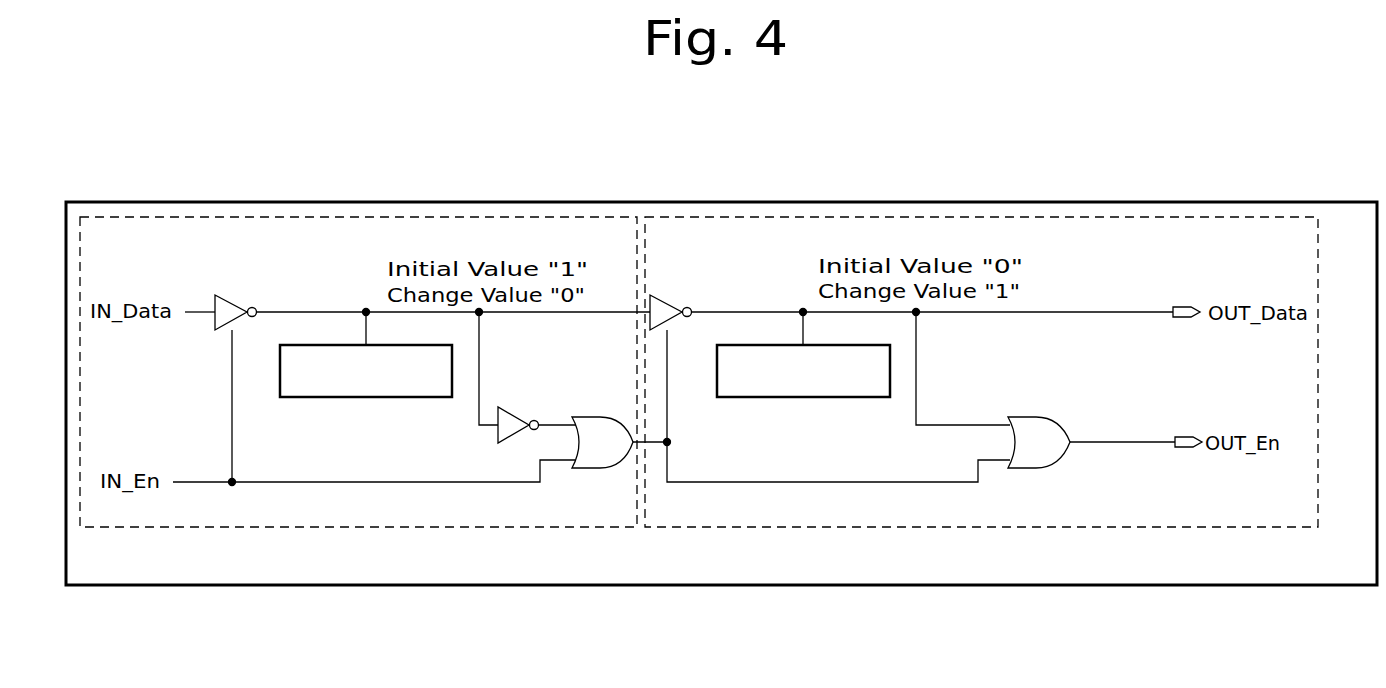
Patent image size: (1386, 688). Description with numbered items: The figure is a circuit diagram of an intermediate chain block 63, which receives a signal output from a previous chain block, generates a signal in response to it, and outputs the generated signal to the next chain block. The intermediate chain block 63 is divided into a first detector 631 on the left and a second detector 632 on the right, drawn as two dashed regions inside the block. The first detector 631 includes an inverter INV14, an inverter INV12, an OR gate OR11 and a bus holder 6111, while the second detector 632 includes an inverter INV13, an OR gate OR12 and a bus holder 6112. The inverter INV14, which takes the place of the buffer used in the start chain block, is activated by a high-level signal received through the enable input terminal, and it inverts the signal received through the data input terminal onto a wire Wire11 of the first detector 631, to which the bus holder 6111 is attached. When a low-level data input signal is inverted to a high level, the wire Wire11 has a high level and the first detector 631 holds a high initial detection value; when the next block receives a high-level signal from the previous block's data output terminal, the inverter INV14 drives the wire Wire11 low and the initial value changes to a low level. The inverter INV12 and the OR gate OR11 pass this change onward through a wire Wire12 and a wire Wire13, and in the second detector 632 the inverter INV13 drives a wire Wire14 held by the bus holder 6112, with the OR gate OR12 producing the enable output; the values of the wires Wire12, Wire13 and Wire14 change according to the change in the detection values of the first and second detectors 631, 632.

The intermediate chain block 63 is at (1313, 200).
The first detector 631 is at (593, 215).
The second detector 632 is at (1140, 215).
The bus holder 6111 is at (366, 397).
The bus holder 6112 is at (832, 397).
The inverter INV14 is at (237, 300).
The inverter INV13 is at (672, 300).
The inverter INV12 is at (510, 407).
The OR gate OR11 is at (600, 468).
The OR gate OR12 is at (1040, 468).
The wire Wire11 is at (453, 356).
The wire Wire12 is at (566, 404).
The wire Wire13 is at (821, 406).
The wire Wire14 is at (932, 356).